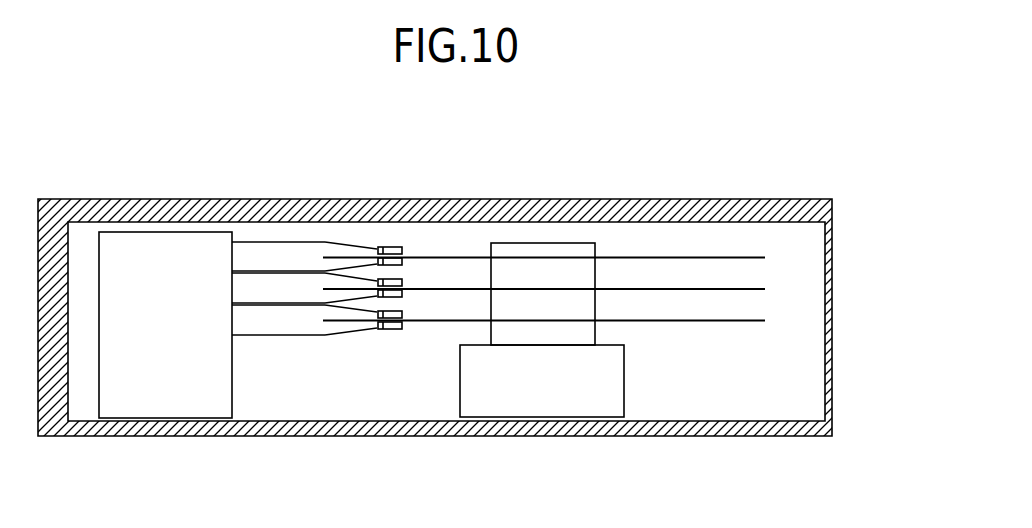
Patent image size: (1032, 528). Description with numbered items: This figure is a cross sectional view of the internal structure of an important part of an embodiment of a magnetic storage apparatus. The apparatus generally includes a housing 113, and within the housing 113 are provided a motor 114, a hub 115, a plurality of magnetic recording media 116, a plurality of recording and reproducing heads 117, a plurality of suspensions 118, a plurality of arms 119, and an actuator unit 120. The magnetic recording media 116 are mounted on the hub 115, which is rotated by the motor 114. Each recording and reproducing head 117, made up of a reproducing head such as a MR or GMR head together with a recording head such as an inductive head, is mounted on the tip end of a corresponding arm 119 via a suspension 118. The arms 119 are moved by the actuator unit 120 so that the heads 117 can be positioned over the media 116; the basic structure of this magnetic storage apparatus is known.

The housing 113 is at (832, 405).
The motor 114 is at (535, 408).
The hub 115 is at (540, 243).
The magnetic recording media 116 is at (692, 258).
The recording and reproducing head 117 is at (408, 247).
The suspension 118 is at (368, 243).
The arm 119 is at (270, 243).
The actuator unit 120 is at (183, 407).